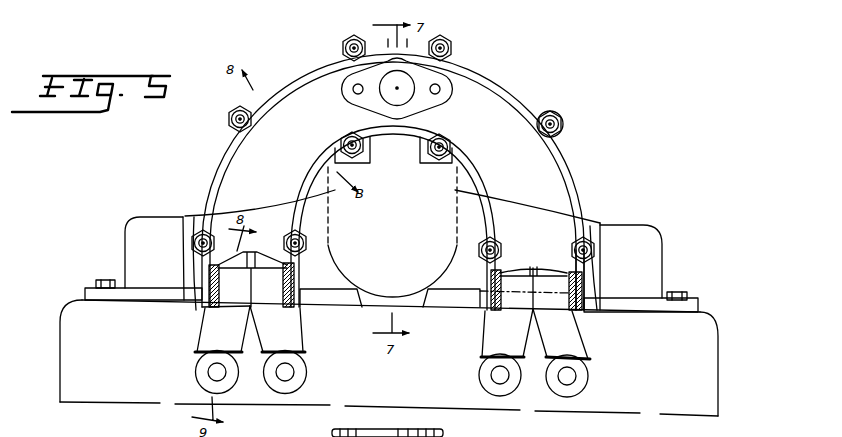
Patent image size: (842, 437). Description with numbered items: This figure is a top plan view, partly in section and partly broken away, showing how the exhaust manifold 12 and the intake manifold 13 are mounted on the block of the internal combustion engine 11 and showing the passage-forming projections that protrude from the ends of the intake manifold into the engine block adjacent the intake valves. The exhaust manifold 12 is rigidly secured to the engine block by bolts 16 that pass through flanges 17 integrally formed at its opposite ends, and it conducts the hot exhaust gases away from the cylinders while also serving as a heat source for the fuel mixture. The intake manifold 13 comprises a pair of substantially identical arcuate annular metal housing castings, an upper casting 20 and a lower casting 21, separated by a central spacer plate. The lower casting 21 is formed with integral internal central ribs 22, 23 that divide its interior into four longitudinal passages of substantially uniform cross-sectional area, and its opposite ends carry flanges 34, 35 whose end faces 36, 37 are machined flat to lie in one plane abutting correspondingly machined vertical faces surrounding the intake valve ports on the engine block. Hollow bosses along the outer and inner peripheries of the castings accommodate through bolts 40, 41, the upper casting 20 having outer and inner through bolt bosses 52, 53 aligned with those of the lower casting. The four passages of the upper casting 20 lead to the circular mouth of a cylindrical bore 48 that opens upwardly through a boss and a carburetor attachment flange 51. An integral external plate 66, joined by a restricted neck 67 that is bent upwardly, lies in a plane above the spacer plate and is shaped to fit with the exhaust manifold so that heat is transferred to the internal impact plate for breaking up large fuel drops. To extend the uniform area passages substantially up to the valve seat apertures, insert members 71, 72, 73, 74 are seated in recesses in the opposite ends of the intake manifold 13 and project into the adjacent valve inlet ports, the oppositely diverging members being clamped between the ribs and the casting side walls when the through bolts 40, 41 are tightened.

The internal combustion engine 11 is at (725, 336).
The exhaust manifold 12 is at (604, 222).
The intake manifold 13 is at (512, 78).
The bolts 16 is at (107, 278).
The flanges 17 is at (85, 293).
The upper casting 20 is at (559, 167).
The lower casting 21 is at (220, 287).
The rib 22 is at (534, 268).
The rib 23 is at (254, 252).
The flange 34 is at (583, 310).
The flange 35 is at (293, 307).
The end face 36 is at (492, 311).
The end face 37 is at (207, 309).
The through bolts 40 is at (561, 123).
The through bolts 41 is at (442, 136).
The cylindrical bore 48 is at (401, 86).
The carburetor attachment flange 51 is at (438, 98).
The outer through bolt bosses 52 is at (553, 112).
The inner through bolt bosses 53 is at (452, 158).
The external plate 66 is at (337, 258).
The neck 67 is at (371, 152).
The insert member 71 is at (210, 336).
The insert member 72 is at (293, 332).
The insert member 73 is at (493, 337).
The insert member 74 is at (575, 338).